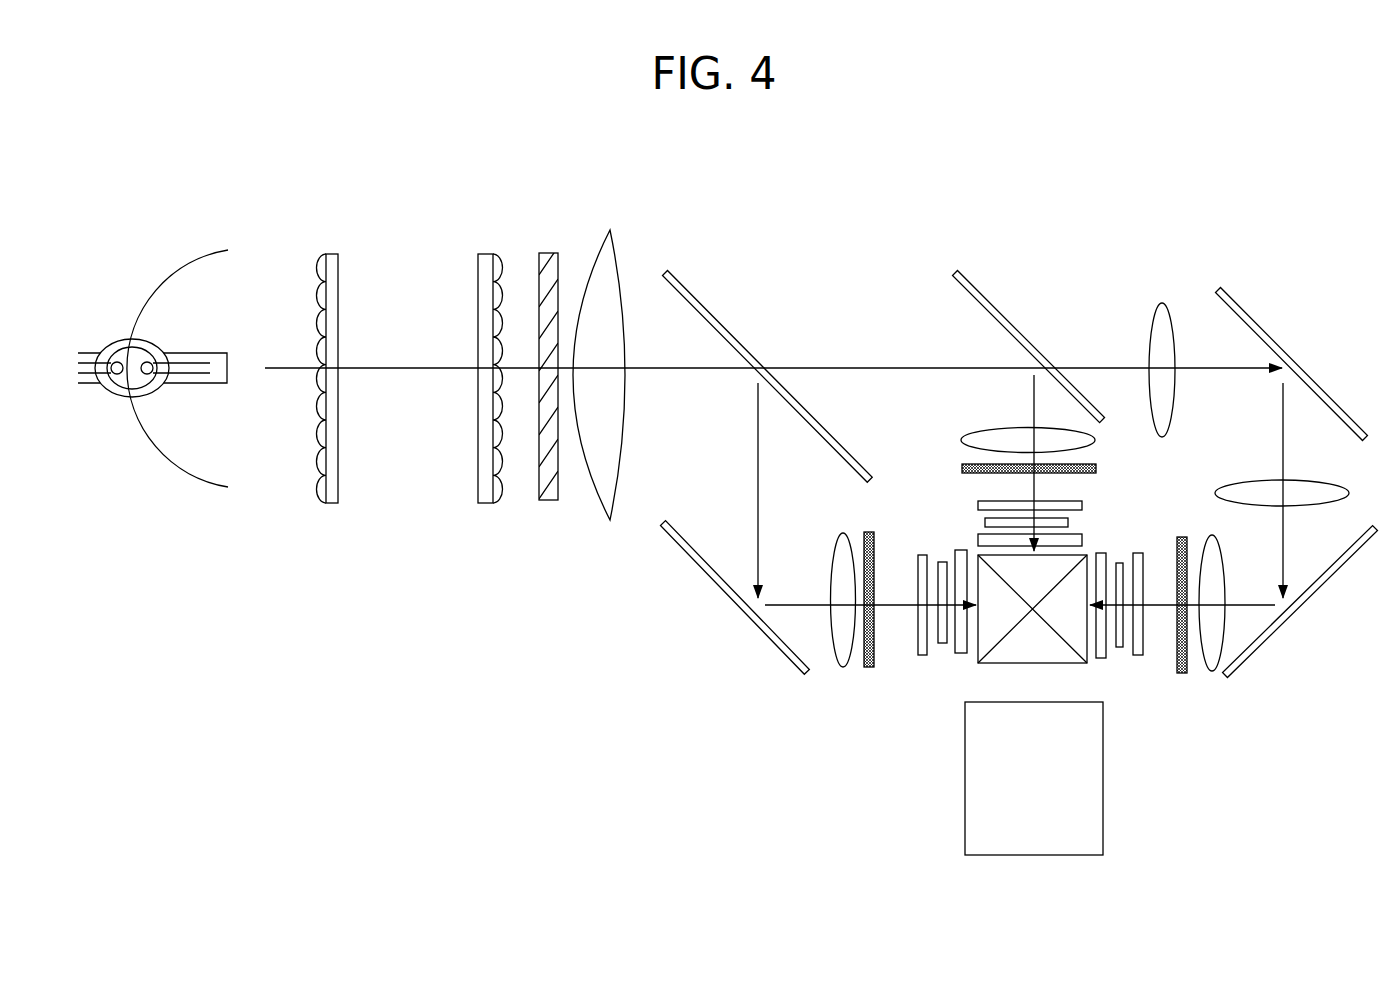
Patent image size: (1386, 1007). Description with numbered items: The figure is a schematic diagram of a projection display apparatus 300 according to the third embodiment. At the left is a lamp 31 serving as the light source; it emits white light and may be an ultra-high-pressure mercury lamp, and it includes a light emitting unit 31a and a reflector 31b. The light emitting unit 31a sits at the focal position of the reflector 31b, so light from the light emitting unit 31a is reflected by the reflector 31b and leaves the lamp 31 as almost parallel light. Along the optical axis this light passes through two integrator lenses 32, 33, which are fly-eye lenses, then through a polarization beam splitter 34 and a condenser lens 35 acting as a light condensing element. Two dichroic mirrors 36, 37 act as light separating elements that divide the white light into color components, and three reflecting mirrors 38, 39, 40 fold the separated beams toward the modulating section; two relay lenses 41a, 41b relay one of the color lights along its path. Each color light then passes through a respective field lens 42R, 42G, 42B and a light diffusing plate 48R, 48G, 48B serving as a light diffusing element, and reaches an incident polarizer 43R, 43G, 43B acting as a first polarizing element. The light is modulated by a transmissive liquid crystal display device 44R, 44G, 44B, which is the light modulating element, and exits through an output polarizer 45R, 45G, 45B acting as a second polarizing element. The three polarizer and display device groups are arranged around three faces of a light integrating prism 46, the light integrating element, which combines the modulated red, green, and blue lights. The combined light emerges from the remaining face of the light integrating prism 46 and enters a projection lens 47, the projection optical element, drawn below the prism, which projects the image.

The projection display apparatus 300 is at (1170, 192).
The lamp 31 is at (130, 248).
The light emitting unit 31a is at (140, 347).
The reflector 31b is at (165, 478).
The integrator lens 32 is at (332, 255).
The integrator lens 33 is at (487, 255).
The polarization beam splitter 34 is at (549, 500).
The condenser lens 35 is at (610, 230).
The dichroic mirror 36 is at (712, 310).
The dichroic mirror 37 is at (985, 292).
The reflecting mirror 38 is at (752, 622).
The reflecting mirror 39 is at (1253, 313).
The reflecting mirror 40 is at (1273, 638).
The relay lens 41a is at (1162, 305).
The relay lens 41b is at (1245, 485).
The field lens 42R is at (843, 667).
The field lens 42G is at (985, 428).
The field lens 42B is at (1212, 667).
The incident polarizer 43R is at (920, 555).
The incident polarizer 43G is at (1082, 505).
The incident polarizer 43B is at (1101, 658).
The transmissive liquid crystal display device 44R is at (942, 643).
The transmissive liquid crystal display device 44G is at (1068, 523).
The transmissive liquid crystal display device 44B is at (1120, 647).
The output polarizer 45R is at (960, 550).
The output polarizer 45G is at (1082, 540).
The output polarizer 45B is at (1138, 655).
The light integrating prism 46 is at (978, 660).
The projection lens 47 is at (965, 780).
The light diffusing plate 48R is at (869, 667).
The light diffusing plate 48G is at (962, 468).
The light diffusing plate 48B is at (1182, 673).